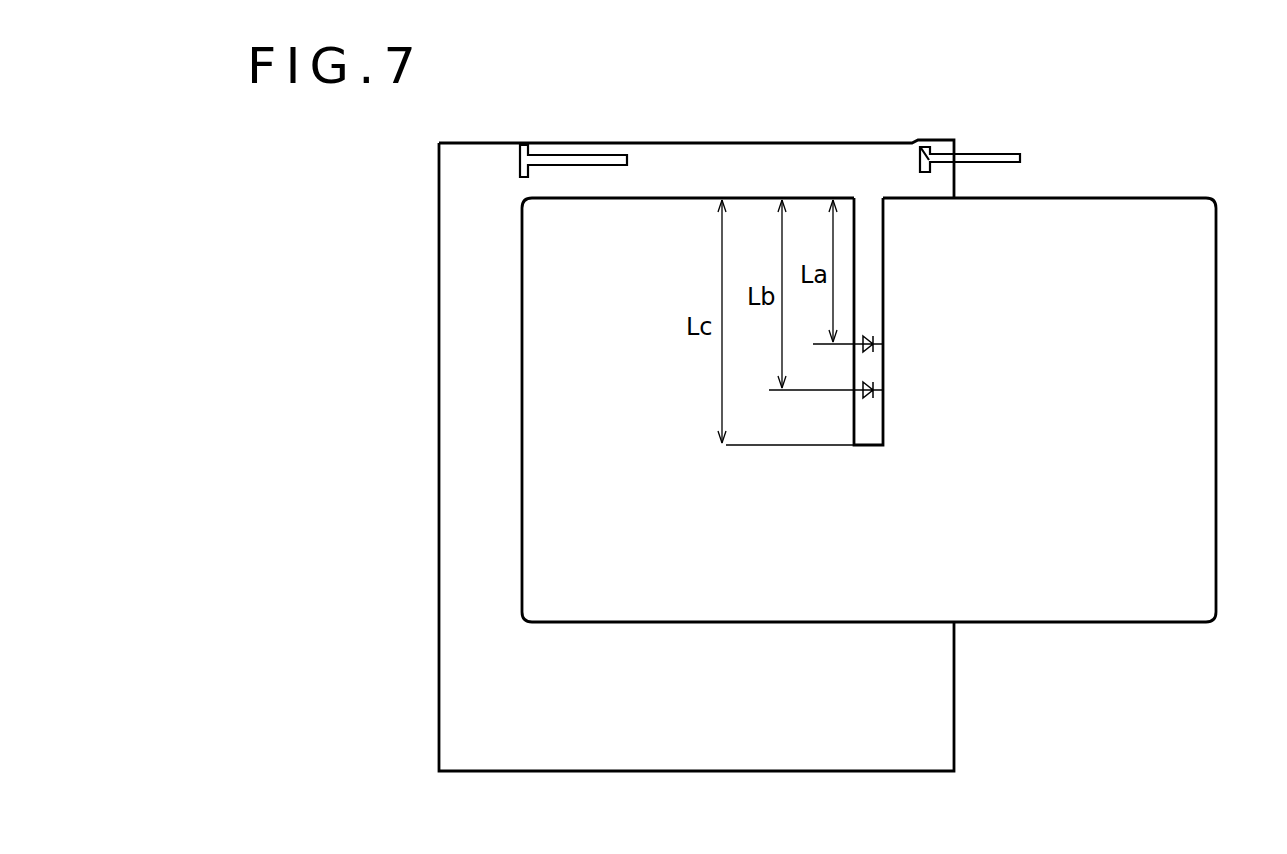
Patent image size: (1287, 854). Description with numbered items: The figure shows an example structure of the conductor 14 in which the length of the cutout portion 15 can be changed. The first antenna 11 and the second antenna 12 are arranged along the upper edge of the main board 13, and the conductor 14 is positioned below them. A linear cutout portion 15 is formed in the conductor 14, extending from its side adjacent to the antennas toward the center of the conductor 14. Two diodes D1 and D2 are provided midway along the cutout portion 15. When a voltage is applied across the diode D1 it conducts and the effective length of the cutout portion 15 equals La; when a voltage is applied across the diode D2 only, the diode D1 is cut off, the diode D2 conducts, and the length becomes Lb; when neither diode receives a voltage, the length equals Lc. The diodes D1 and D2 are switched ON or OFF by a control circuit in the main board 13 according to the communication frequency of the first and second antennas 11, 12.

The first antenna 11 is at (591, 155).
The second antenna 12 is at (997, 154).
The main board 13 is at (955, 732).
The conductor 14 is at (1216, 480).
The cutout portion 15 is at (868, 246).
The diode D1 is at (873, 333).
The diode D2 is at (877, 376).